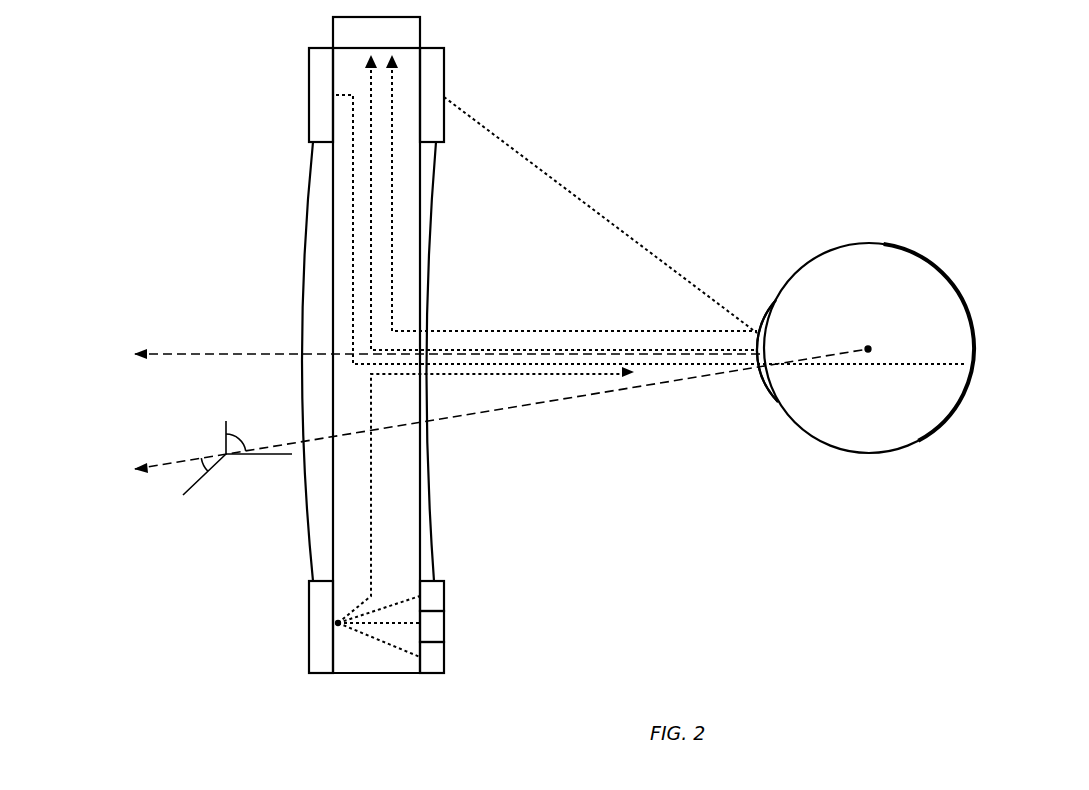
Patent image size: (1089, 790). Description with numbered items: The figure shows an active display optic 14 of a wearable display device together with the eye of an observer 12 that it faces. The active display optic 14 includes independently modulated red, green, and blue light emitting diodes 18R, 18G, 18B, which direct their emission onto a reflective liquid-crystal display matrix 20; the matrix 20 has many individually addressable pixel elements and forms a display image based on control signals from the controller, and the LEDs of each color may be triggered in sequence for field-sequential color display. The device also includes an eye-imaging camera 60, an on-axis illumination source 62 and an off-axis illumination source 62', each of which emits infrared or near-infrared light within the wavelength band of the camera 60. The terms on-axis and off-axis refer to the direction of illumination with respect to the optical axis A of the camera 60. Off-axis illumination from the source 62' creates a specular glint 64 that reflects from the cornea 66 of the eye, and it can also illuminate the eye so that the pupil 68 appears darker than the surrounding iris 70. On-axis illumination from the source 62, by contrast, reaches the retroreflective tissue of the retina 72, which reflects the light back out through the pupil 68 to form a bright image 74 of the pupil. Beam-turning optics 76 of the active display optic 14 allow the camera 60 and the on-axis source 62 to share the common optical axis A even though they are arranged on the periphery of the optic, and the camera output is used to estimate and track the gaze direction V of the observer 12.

The observer 12 is at (994, 288).
The active display optic 14 is at (633, 526).
The red light emitting diode 18R is at (444, 592).
The green light emitting diode 18G is at (444, 633).
The blue light emitting diode 18B is at (444, 662).
The reflective liquid-crystal display matrix 20 is at (322, 673).
The eye-imaging camera 60 is at (388, 44).
The on-axis illumination source 62 is at (280, 95).
The off-axis illumination source 62' is at (588, 190).
The specular glint 64 is at (513, 331).
The cornea 66 is at (758, 367).
The pupil 68 is at (786, 351).
The iris 70 is at (772, 386).
The retina 72 is at (922, 262).
The bright image of the pupil 74 is at (460, 350).
The beam-turning optics 76 is at (366, 666).